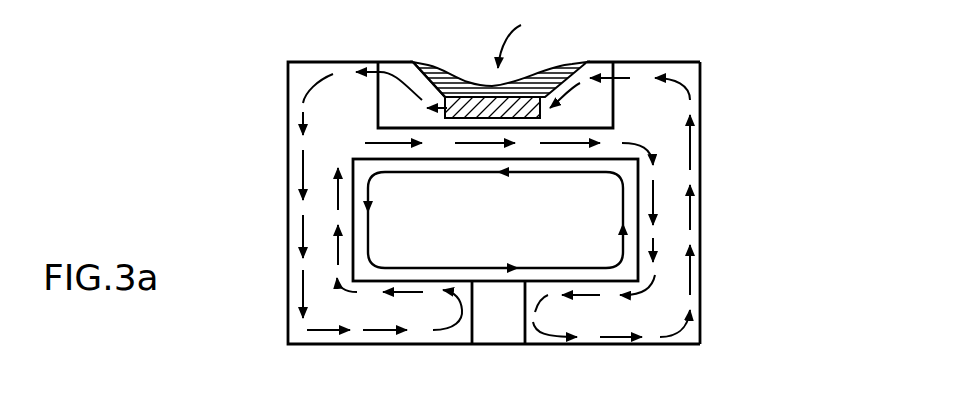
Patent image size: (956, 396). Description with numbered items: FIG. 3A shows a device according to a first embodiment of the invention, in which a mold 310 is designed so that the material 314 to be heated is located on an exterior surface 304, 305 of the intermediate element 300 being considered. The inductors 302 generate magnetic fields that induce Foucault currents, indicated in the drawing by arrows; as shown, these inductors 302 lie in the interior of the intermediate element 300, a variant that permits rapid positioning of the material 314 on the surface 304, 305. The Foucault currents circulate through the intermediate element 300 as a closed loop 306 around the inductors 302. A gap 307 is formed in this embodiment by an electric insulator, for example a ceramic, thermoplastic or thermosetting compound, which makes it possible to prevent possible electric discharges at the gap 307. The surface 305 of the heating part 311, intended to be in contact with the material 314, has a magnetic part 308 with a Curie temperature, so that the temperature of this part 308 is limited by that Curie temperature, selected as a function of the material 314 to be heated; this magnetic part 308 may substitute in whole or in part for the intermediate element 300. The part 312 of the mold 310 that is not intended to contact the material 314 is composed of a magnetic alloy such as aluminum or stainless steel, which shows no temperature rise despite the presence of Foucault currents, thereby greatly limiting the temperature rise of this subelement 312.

The intermediate element 300 is at (700, 62).
The inductors 302 is at (378, 233).
The exterior surface 304 is at (700, 230).
The surface of the heating part 305 is at (578, 62).
The circulation loop 306 is at (527, 176).
The gap 307 is at (497, 320).
The magnetic part 308 is at (538, 114).
The mold 310 is at (528, 39).
The heating part 311 is at (413, 121).
The part of the mold not intended to contact the material 312 is at (673, 172).
The material to be heated 314 is at (427, 62).